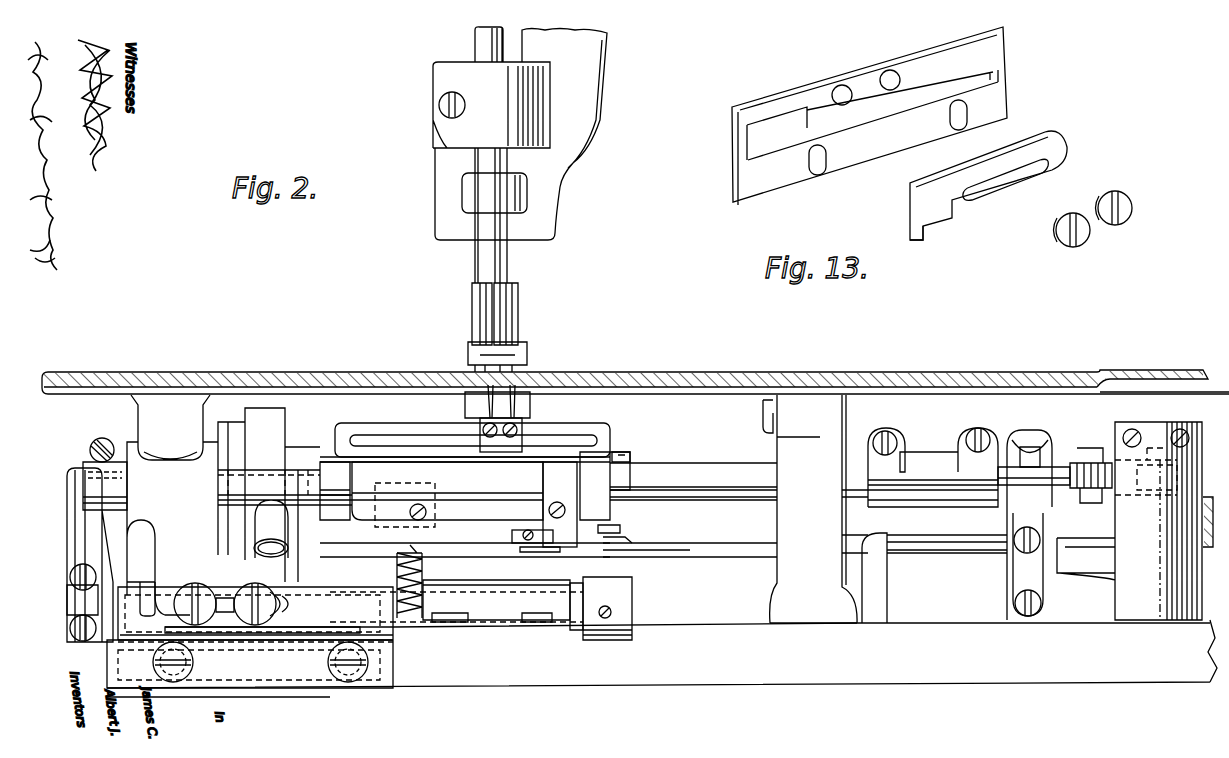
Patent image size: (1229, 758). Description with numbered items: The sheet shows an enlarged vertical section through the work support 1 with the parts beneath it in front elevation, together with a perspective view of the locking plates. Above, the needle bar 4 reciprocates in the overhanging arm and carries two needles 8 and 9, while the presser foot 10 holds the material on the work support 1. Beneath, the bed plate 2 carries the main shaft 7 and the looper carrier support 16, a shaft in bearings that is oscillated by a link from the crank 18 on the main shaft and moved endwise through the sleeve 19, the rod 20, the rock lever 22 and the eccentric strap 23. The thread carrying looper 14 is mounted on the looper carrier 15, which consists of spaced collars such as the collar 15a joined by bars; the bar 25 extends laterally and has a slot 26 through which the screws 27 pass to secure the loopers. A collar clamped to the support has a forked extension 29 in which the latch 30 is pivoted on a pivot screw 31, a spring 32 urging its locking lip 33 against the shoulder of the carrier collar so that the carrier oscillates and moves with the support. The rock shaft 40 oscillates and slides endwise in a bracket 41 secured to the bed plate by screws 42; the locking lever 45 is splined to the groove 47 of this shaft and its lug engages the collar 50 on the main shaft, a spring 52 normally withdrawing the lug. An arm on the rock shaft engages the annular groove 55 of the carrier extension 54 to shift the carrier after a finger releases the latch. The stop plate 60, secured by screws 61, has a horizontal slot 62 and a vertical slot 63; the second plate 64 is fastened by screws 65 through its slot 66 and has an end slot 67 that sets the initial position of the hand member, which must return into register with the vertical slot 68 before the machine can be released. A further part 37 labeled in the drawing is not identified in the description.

In FIG. 2, the work support 1 is at (305, 372).
In FIG. 2, the bed plate 2 is at (718, 668).
In FIG. 2, the needle bar 4 is at (483, 42).
In FIG. 2, the main shaft 7 is at (78, 536).
In FIG. 2, the needle 8 is at (512, 267).
In FIG. 2, the needle 9 is at (480, 267).
In FIG. 2, the presser foot 10 is at (527, 349).
In FIG. 2, the thread carrying looper 14 is at (489, 407).
In FIG. 2, the looper carrier 15 is at (447, 491).
In FIG. 2, the collar 15a is at (475, 486).
In FIG. 2, the looper carrier support 16 is at (742, 480).
In FIG. 2, the crank 18 is at (516, 407).
In FIG. 2, the sleeve 19 is at (927, 467).
In FIG. 2, the rod 20 is at (1058, 477).
In FIG. 2, the rock lever 22 is at (1138, 567).
In FIG. 2, the eccentric strap 23 is at (1030, 503).
In FIG. 2, the bar 25 is at (583, 427).
In FIG. 2, the slot 26 is at (473, 444).
In FIG. 2, the screws 27 is at (495, 440).
In FIG. 2, the forked extension 29 is at (558, 533).
In FIG. 2, the latch 30 is at (628, 557).
In FIG. 2, the pivot screw 31 is at (528, 541).
In FIG. 2, the spring 32 is at (540, 552).
In FIG. 2, the locking lip 33 is at (613, 537).
In FIG. 2, the lug 37 is at (598, 533).
In FIG. 2, the rock shaft 40 is at (590, 610).
In FIG. 2, the bracket 41 is at (445, 617).
In FIG. 2, the screws 42 is at (530, 618).
In FIG. 2, the locking lever 45 is at (417, 560).
In FIG. 2, the groove 47 is at (577, 627).
In FIG. 2, the collar 50 is at (405, 505).
In FIG. 2, the spring 52 is at (423, 597).
In FIG. 2, the extension 54 is at (635, 452).
In FIG. 2, the annular groove 55 is at (620, 452).
In FIG. 2, the stop plate 60 is at (282, 667).
In FIG. 13, the stop plate 60 is at (988, 55).
In FIG. 2, the screws 61 is at (187, 673).
In FIG. 2, the horizontal slot 62 is at (317, 635).
In FIG. 13, the horizontal slot 62 is at (892, 97).
In FIG. 13, the vertical slot 63 is at (775, 128).
In FIG. 2, the second plate 64 is at (232, 590).
In FIG. 13, the second plate 64 is at (1030, 143).
In FIG. 2, the screws 65 is at (190, 584).
In FIG. 13, the screws 65 is at (1123, 222).
In FIG. 2, the slot 66 is at (227, 612).
In FIG. 13, the slot 66 is at (995, 175).
In FIG. 2, the slot 67 is at (72, 617).
In FIG. 13, the slot 67 is at (935, 212).
In FIG. 2, the vertical slot 68 is at (140, 605).